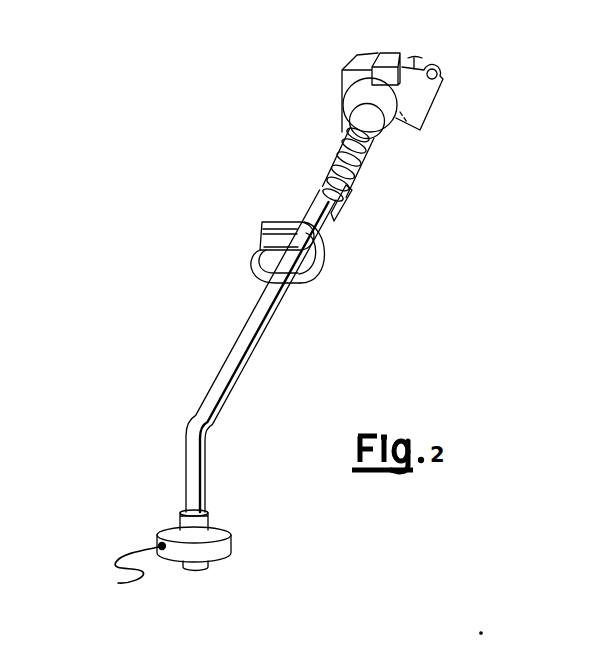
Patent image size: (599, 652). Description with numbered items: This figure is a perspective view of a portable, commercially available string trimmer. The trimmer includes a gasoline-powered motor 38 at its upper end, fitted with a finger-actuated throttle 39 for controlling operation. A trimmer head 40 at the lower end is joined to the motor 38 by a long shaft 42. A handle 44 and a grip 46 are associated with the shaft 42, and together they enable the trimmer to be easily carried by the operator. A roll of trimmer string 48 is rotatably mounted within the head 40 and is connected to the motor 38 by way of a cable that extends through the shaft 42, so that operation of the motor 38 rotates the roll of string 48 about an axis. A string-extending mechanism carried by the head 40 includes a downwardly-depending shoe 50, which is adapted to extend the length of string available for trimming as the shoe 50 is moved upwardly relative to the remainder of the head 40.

The gasoline-powered motor 38 is at (391, 51).
The finger-actuated throttle 39 is at (349, 191).
The trimmer head 40 is at (232, 538).
The shaft 42 is at (250, 350).
The handle 44 is at (250, 251).
The grip 46 is at (363, 158).
The roll of trimmer string 48 is at (118, 553).
The shoe 50 is at (210, 568).